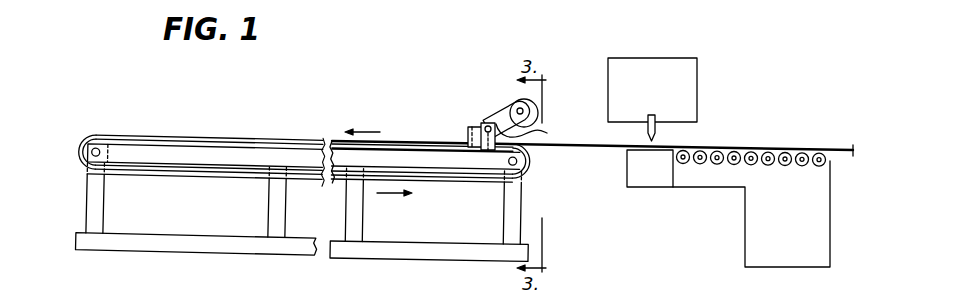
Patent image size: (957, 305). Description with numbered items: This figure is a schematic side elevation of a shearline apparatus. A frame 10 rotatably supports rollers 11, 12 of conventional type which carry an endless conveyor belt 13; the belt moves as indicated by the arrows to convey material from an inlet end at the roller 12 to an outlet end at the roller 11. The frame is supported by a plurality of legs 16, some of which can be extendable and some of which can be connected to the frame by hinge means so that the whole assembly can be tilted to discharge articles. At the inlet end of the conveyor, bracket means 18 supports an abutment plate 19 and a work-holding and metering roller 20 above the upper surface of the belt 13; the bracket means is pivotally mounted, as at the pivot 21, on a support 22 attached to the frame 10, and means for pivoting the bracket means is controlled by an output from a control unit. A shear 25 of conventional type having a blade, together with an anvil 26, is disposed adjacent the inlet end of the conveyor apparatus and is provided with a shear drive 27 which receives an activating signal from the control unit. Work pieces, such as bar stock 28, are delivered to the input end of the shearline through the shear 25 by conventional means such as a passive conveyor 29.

The frame 10 is at (167, 143).
The roller 11 is at (81, 152).
The roller 12 is at (533, 168).
The endless conveyor belt 13 is at (236, 136).
The legs 16 is at (104, 200).
The bracket means 18 is at (500, 105).
The abutment plate 19 is at (468, 137).
The work-holding and metering roller 20 is at (538, 106).
The pivot 21 is at (483, 124).
The support 22 is at (535, 131).
The shear 25 is at (662, 130).
The anvil 26 is at (627, 180).
The shear drive 27 is at (700, 80).
The bar stock 28 is at (782, 148).
The passive conveyor 29 is at (745, 220).